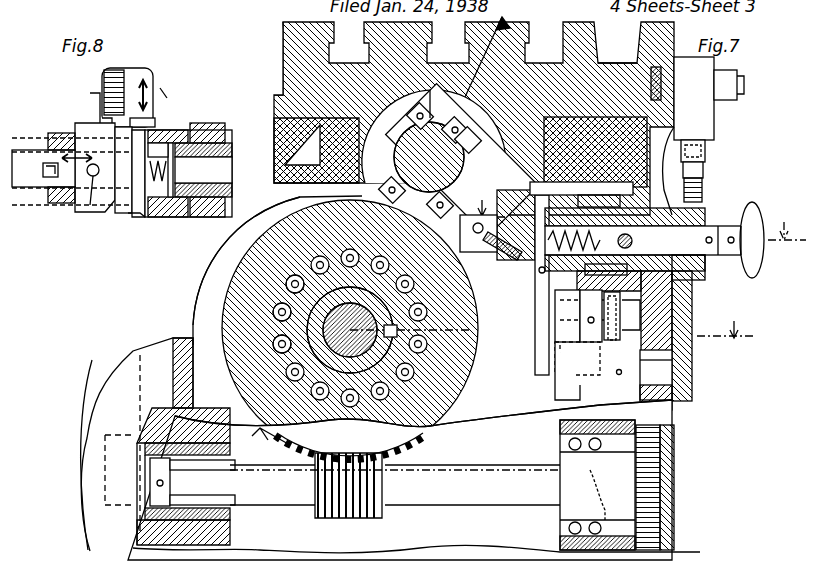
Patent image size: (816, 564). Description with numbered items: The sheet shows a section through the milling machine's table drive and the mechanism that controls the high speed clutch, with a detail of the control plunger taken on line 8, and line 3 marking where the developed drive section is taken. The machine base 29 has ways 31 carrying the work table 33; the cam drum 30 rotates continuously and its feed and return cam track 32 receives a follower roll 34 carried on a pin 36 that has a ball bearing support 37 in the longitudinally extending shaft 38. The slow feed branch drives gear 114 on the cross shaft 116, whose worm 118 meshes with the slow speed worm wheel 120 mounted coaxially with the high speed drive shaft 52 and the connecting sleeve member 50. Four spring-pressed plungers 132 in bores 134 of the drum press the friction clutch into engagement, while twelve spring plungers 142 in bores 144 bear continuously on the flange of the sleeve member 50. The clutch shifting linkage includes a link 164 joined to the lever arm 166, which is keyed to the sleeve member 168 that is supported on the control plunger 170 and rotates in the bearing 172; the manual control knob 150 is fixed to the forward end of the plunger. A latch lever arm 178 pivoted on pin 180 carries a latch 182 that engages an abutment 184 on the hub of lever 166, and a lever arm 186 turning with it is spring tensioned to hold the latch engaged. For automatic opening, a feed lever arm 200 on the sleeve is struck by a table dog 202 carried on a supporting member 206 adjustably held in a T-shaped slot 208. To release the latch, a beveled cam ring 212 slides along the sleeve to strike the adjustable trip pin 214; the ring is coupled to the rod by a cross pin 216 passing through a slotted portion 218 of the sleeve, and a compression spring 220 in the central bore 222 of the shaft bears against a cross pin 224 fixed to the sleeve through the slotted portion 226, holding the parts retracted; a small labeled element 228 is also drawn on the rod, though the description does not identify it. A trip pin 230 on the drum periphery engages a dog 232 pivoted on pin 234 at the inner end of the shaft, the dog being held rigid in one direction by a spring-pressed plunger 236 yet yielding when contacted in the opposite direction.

In FIG. 7, the section line 3— 3 is at (608, 177).
In FIG. 7, the section line 8— 8 is at (630, 218).
In FIG. 7, the base 29 is at (175, 428).
In FIG. 7, the cam drum 30 is at (262, 248).
In FIG. 7, the ways 31 is at (305, 142).
In FIG. 7, the feed and return cam track 32 is at (290, 212).
In FIG. 7, the work table 33 is at (612, 75).
In FIG. 7, the follower roll 34 is at (345, 196).
In FIG. 7, the pin 36 is at (455, 118).
In FIG. 7, the ball bearing support 37 is at (430, 90).
In FIG. 7, the shaft 38 is at (474, 118).
In FIG. 7, the connecting sleeve member 50 is at (340, 300).
In FIG. 7, the high speed drive shaft 52 is at (390, 338).
In FIG. 7, the gear 114 is at (655, 490).
In FIG. 7, the cross shaft 116 is at (290, 505).
In FIG. 7, the worm 118 is at (383, 515).
In FIG. 7, the slow speed worm wheel 120 is at (400, 430).
In FIG. 7, the spring-pressed plungers 132 is at (345, 262).
In FIG. 7, the bores 134 is at (275, 350).
In FIG. 7, the spring plungers 142 is at (275, 314).
In FIG. 7, the bores 144 is at (276, 305).
In FIG. 7, the manual control knob 150 is at (768, 253).
In FIG. 7, the link 164 is at (614, 318).
In FIG. 7, the lever arm 166 is at (641, 318).
In FIG. 8, the lever arm 166 is at (138, 217).
In FIG. 7, the sleeve member 168 is at (705, 270).
In FIG. 7, the control plunger 170 is at (705, 222).
In FIG. 8, the control plunger 170 is at (70, 188).
In FIG. 7, the bearing 172 is at (688, 296).
In FIG. 7, the latch lever arm 178 is at (588, 371).
In FIG. 8, the latch lever arm 178 is at (162, 95).
In FIG. 7, the pivot pin 180 is at (672, 366).
In FIG. 8, the latch 182 is at (172, 96).
In FIG. 8, the abutment 184 is at (158, 120).
In FIG. 7, the lever arm 186 is at (672, 400).
In FIG. 7, the feed lever arm 200 is at (705, 168).
In FIG. 7, the table dog 202 is at (700, 145).
In FIG. 7, the supporting member 206 is at (725, 70).
In FIG. 7, the T-shaped slot 208 is at (682, 98).
In FIG. 7, the beveled cam ring 212 is at (585, 165).
In FIG. 8, the beveled cam ring 212 is at (118, 200).
In FIG. 8, the trip pin 214 is at (100, 95).
In FIG. 7, the cross pin 216 is at (579, 316).
In FIG. 8, the cross pin 216 is at (85, 200).
In FIG. 7, the slotted portion 218 is at (587, 316).
In FIG. 8, the compression spring 220 is at (93, 176).
In FIG. 7, the central bore 222 is at (703, 190).
In FIG. 8, the central bore 222 is at (188, 170).
In FIG. 7, the cross pin 224 is at (628, 242).
In FIG. 8, the cross pin 224 is at (145, 200).
In FIG. 7, the slotted portion 226 is at (581, 191).
In FIG. 8, the slotted portion 226 is at (148, 218).
In FIG. 7, the pin 228 is at (608, 255).
In FIG. 7, the trip pin 230 is at (520, 262).
In FIG. 7, the dog 232 is at (498, 250).
In FIG. 8, the dog 232 is at (15, 165).
In FIG. 7, the pin 234 is at (505, 217).
In FIG. 8, the pin 234 is at (45, 160).
In FIG. 7, the spring-pressed plunger 236 is at (535, 300).
In FIG. 8, the spring-pressed plunger 236 is at (50, 180).